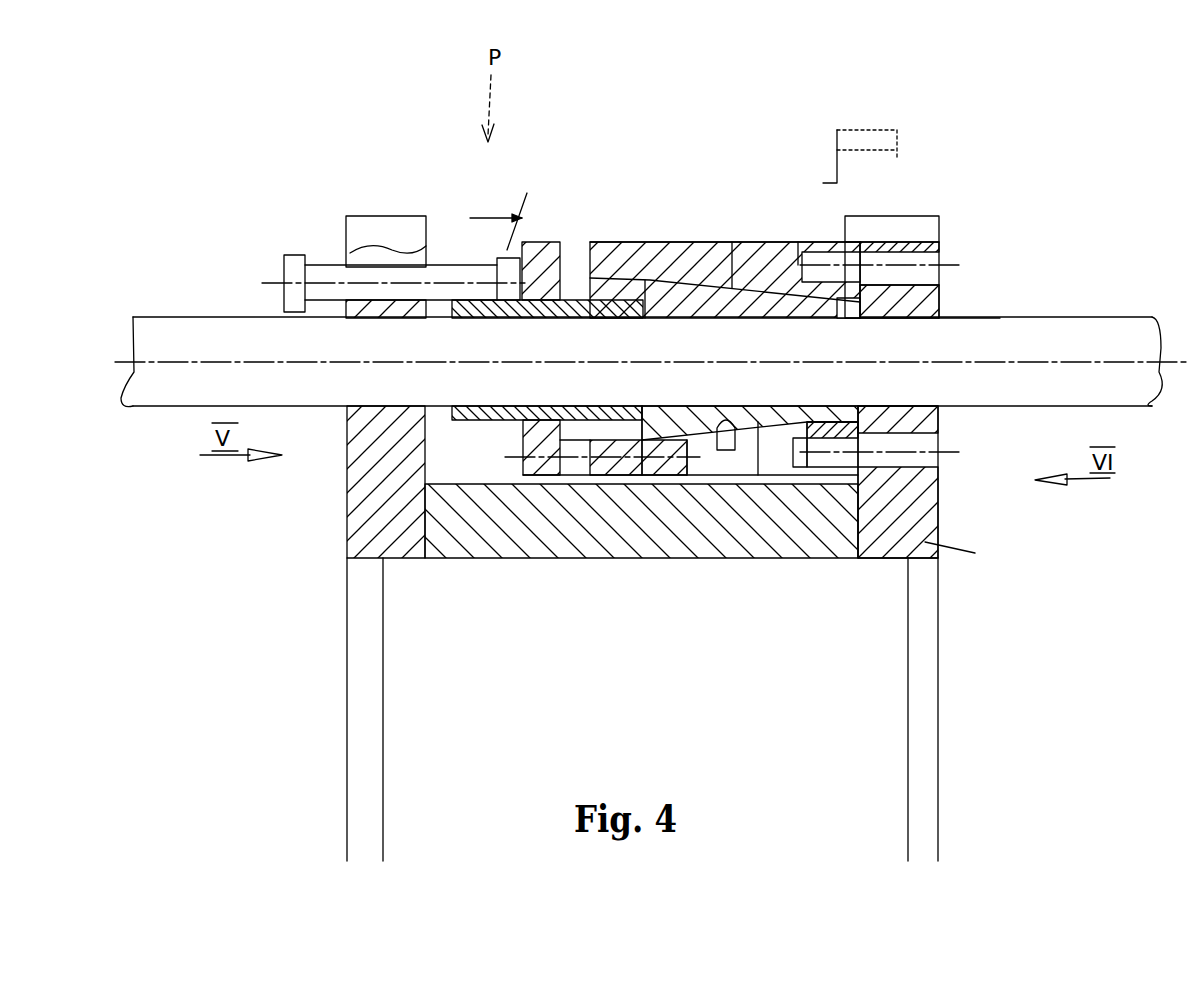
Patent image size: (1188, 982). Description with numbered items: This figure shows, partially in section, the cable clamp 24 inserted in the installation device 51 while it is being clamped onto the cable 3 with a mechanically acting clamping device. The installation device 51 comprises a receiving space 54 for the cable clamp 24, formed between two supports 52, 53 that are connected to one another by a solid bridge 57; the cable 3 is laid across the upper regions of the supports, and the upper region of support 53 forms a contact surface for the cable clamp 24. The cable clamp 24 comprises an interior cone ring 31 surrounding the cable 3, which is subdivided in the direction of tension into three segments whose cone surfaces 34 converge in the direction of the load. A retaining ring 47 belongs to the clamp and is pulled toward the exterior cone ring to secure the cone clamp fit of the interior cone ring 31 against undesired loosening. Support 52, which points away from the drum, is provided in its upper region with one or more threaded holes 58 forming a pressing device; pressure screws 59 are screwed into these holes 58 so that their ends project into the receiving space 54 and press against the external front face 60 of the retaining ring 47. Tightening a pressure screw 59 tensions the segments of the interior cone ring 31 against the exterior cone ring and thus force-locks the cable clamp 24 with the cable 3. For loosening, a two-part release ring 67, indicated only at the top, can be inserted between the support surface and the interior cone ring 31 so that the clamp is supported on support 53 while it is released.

The cable 3 is at (1028, 330).
The cable clamp 24 is at (755, 173).
The interior cone ring 31 is at (762, 300).
The cone surfaces 34 is at (795, 460).
The retaining ring 47 is at (548, 460).
The installation device 51 is at (1068, 225).
The support 52 is at (361, 667).
The support 53 is at (921, 677).
The receiving space 54 is at (700, 217).
The solid bridge 57 is at (643, 558).
The threaded holes 58 is at (386, 265).
The pressure screws 59 is at (292, 258).
The external front face 60 is at (524, 242).
The two-part release ring 67 is at (867, 142).